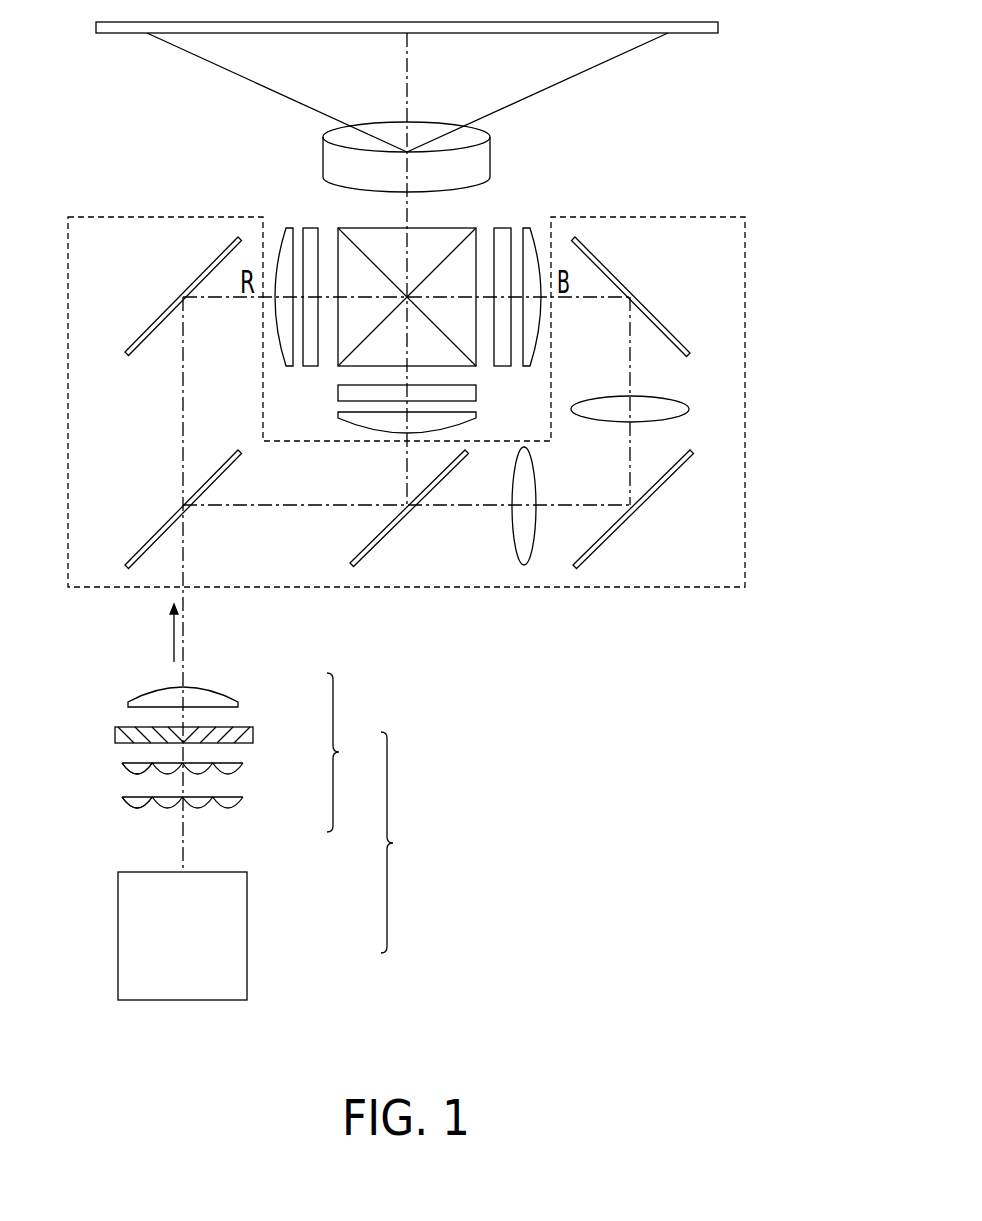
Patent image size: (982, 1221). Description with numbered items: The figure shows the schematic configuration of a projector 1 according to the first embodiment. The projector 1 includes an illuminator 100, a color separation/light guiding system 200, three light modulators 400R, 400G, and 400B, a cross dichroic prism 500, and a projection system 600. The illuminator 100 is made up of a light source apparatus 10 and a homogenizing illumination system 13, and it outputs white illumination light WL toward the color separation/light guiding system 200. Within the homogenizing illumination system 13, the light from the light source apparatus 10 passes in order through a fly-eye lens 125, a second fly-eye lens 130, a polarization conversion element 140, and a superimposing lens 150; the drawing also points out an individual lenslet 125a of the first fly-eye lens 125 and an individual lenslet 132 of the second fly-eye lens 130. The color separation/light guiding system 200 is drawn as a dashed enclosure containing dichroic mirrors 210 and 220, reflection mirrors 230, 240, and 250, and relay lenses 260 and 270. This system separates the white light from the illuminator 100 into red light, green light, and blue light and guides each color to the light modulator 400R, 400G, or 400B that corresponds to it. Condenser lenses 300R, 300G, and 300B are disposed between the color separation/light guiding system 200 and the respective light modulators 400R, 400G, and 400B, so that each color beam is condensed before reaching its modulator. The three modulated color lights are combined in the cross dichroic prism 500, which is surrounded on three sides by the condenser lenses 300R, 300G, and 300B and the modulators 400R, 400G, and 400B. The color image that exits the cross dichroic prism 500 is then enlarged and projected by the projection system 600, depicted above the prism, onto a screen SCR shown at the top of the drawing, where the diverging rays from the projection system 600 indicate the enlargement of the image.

The projector 1 is at (775, 92).
The screen SCR is at (690, 33).
The projection system 600 is at (323, 153).
The cross dichroic prism 500 is at (463, 230).
The light modulator 400R is at (309, 228).
The condenser lens 300R is at (284, 228).
The light modulator 400B is at (503, 228).
The condenser lens 300B is at (527, 230).
The light modulator 400G is at (345, 393).
The condenser lens 300G is at (343, 418).
The reflection mirror 230 is at (127, 348).
The reflection mirror 250 is at (684, 342).
The dichroic mirror 210 is at (148, 540).
The dichroic mirror 220 is at (381, 528).
The reflection mirror 240 is at (658, 490).
The relay lens 260 is at (512, 526).
The relay lens 270 is at (687, 404).
The color separation/light guiding system 200 is at (748, 582).
The illumination light WL is at (172, 632).
The illuminator 100 is at (411, 842).
The homogenizing illumination system 13 is at (352, 752).
The superimposing lens 150 is at (233, 698).
The polarization conversion element 140 is at (242, 727).
The fly-eye lens 130 is at (242, 766).
The second lenslet 132 is at (126, 771).
The fly-eye lens 125 is at (242, 800).
The first lenslet 125a is at (137, 806).
The light source apparatus 10 is at (255, 930).